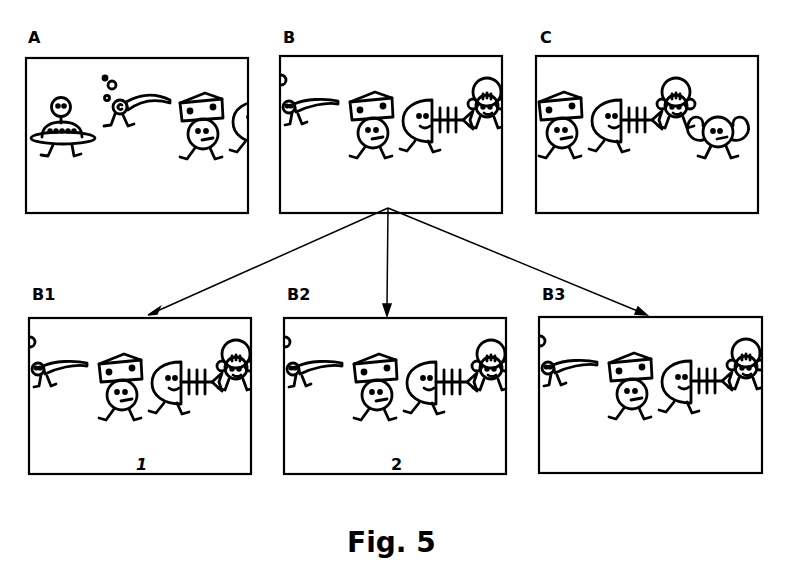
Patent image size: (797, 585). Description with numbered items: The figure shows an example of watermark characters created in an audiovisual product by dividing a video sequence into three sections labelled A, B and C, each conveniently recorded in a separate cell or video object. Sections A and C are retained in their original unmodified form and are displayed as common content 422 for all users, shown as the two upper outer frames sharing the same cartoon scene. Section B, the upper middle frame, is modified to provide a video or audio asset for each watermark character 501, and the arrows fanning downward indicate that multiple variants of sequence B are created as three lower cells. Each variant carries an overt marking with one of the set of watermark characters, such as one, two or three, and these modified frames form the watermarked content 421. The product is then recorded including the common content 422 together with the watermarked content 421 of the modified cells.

The common content 422 is at (128, 193).
The watermarked content 421 is at (562, 465).
The watermark character 501 is at (660, 462).